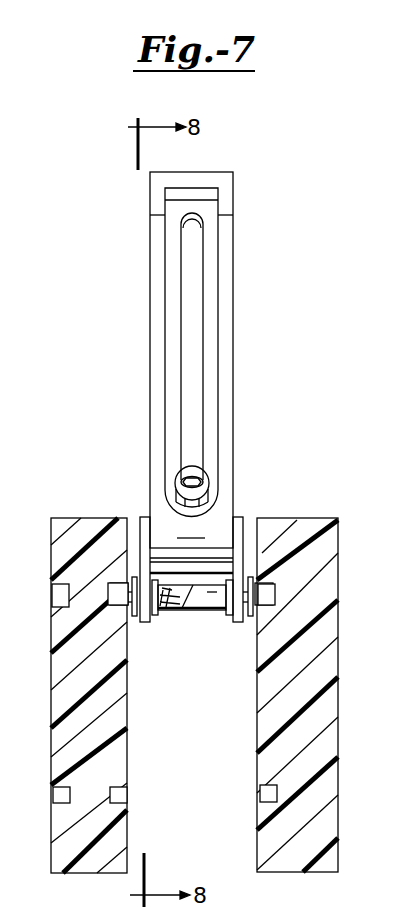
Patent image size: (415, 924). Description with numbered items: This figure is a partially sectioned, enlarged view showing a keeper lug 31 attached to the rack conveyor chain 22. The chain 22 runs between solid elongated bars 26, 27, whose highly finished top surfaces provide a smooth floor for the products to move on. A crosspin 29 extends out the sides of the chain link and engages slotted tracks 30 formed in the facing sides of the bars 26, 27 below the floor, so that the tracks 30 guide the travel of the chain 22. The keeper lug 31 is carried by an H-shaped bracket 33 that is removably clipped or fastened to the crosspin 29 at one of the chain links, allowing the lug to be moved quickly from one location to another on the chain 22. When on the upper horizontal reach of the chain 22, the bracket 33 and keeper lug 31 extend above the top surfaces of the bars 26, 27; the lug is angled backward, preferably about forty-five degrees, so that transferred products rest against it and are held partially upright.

The endless chains 22 is at (194, 612).
The bar 26 is at (340, 758).
The bar 27 is at (50, 623).
The crosspin 29 is at (272, 600).
The slotted tracks 30 is at (110, 585).
The keeper lug 31 is at (233, 330).
The H-shaped bracket 33 is at (242, 516).